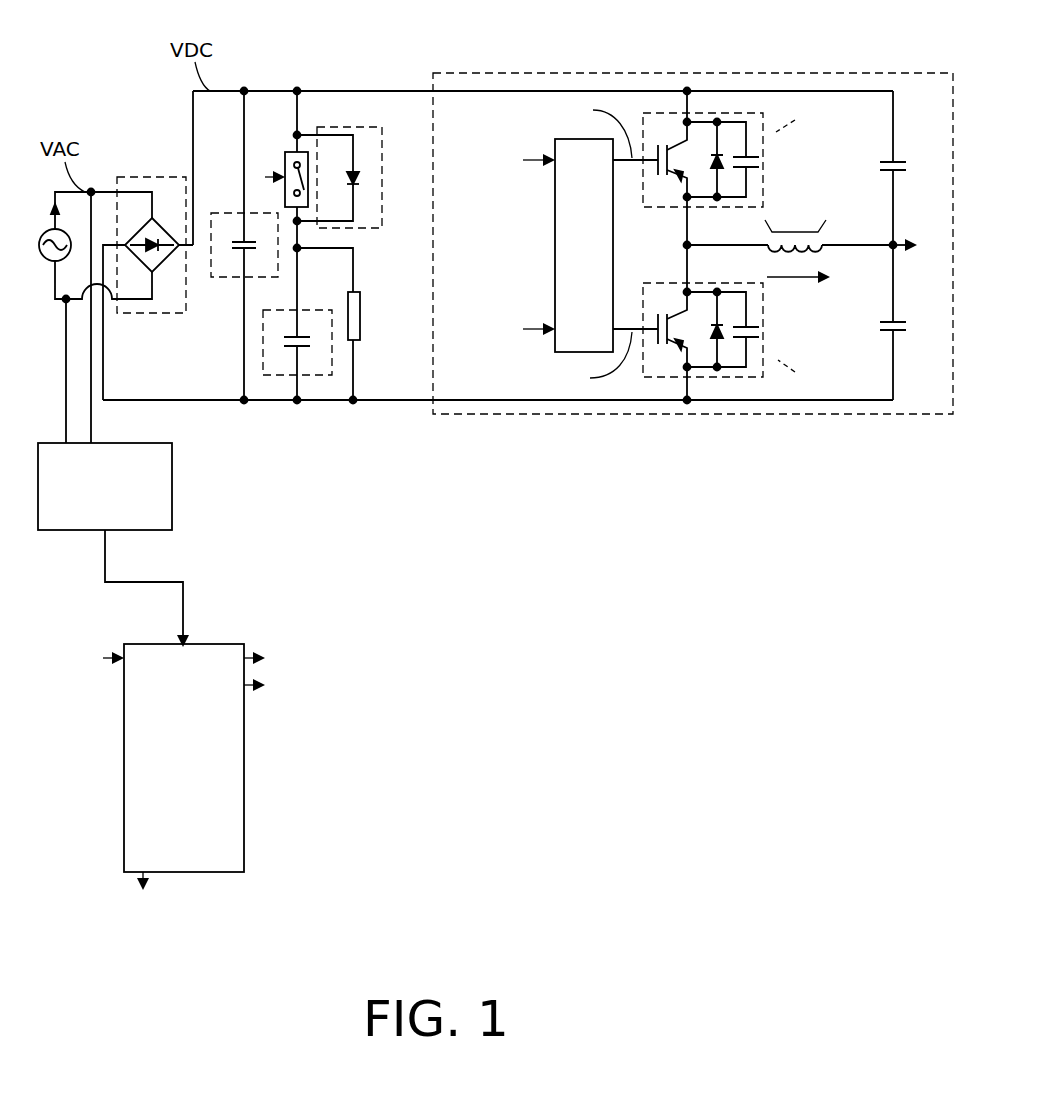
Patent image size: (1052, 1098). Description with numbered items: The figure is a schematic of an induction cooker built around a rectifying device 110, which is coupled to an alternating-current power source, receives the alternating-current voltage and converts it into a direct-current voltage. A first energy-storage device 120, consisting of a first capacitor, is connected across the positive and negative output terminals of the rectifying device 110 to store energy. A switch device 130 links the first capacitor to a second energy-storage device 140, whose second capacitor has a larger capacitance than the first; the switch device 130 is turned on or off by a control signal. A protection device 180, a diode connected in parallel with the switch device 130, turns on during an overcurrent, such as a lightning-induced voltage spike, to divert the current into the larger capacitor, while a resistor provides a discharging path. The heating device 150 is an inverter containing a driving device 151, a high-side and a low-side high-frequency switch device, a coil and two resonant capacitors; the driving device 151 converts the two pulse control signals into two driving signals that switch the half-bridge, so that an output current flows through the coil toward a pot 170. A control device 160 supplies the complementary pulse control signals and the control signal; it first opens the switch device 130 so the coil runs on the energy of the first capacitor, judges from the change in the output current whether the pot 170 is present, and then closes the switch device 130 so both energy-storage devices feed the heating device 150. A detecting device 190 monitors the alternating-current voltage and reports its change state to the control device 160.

The rectifying device 110 is at (150, 175).
The first energy-storage device 120 is at (223, 290).
The switch device 130 is at (290, 152).
The second energy-storage device 140 is at (318, 300).
The heating device 150 is at (855, 73).
The driving device 151 is at (554, 240).
The control device 160 is at (213, 645).
The pot 170 is at (790, 228).
The protection device 180 is at (320, 125).
The detecting device 190 is at (175, 487).